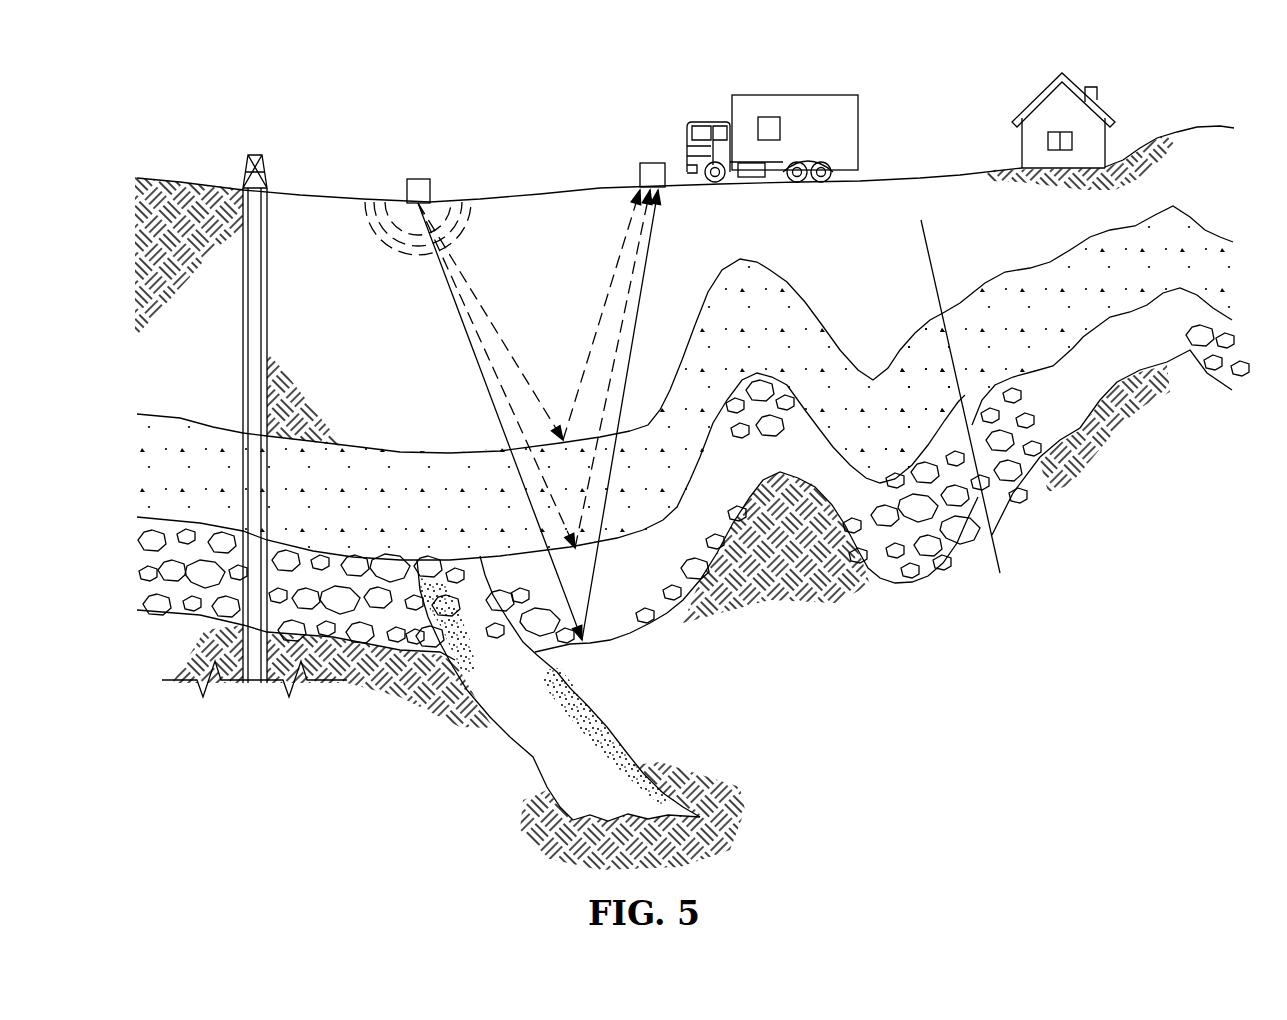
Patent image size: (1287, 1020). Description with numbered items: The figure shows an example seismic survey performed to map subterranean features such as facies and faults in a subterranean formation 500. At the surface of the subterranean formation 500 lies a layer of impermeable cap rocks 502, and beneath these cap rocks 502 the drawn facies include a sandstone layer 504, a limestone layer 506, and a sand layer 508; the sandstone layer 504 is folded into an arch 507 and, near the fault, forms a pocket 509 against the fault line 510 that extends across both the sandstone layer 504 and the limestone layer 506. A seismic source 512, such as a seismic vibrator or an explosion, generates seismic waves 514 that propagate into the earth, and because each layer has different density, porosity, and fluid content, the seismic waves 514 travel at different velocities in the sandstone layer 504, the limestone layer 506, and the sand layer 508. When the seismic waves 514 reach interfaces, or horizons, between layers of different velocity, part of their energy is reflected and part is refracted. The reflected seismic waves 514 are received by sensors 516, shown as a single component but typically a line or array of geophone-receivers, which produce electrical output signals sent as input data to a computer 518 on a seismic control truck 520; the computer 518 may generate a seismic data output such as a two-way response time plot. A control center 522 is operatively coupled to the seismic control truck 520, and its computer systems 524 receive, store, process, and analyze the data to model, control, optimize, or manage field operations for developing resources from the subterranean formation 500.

The subterranean formation 500 is at (476, 73).
The impermeable cap rocks 502 is at (178, 374).
The sandstone layer 504 is at (439, 513).
The limestone layer 506 is at (176, 583).
The anticline fold of formation 507 is at (749, 274).
The sand layer 508 is at (483, 688).
The sand pocket 509 is at (943, 355).
The fault line 510 is at (927, 247).
The seismic source 512 is at (418, 178).
The seismic waves 514 is at (397, 243).
The sensors 516 is at (650, 162).
The computer 518 is at (769, 116).
The seismic control truck 520 is at (844, 95).
The control center 522 is at (1108, 108).
The computer systems 524 is at (1055, 131).